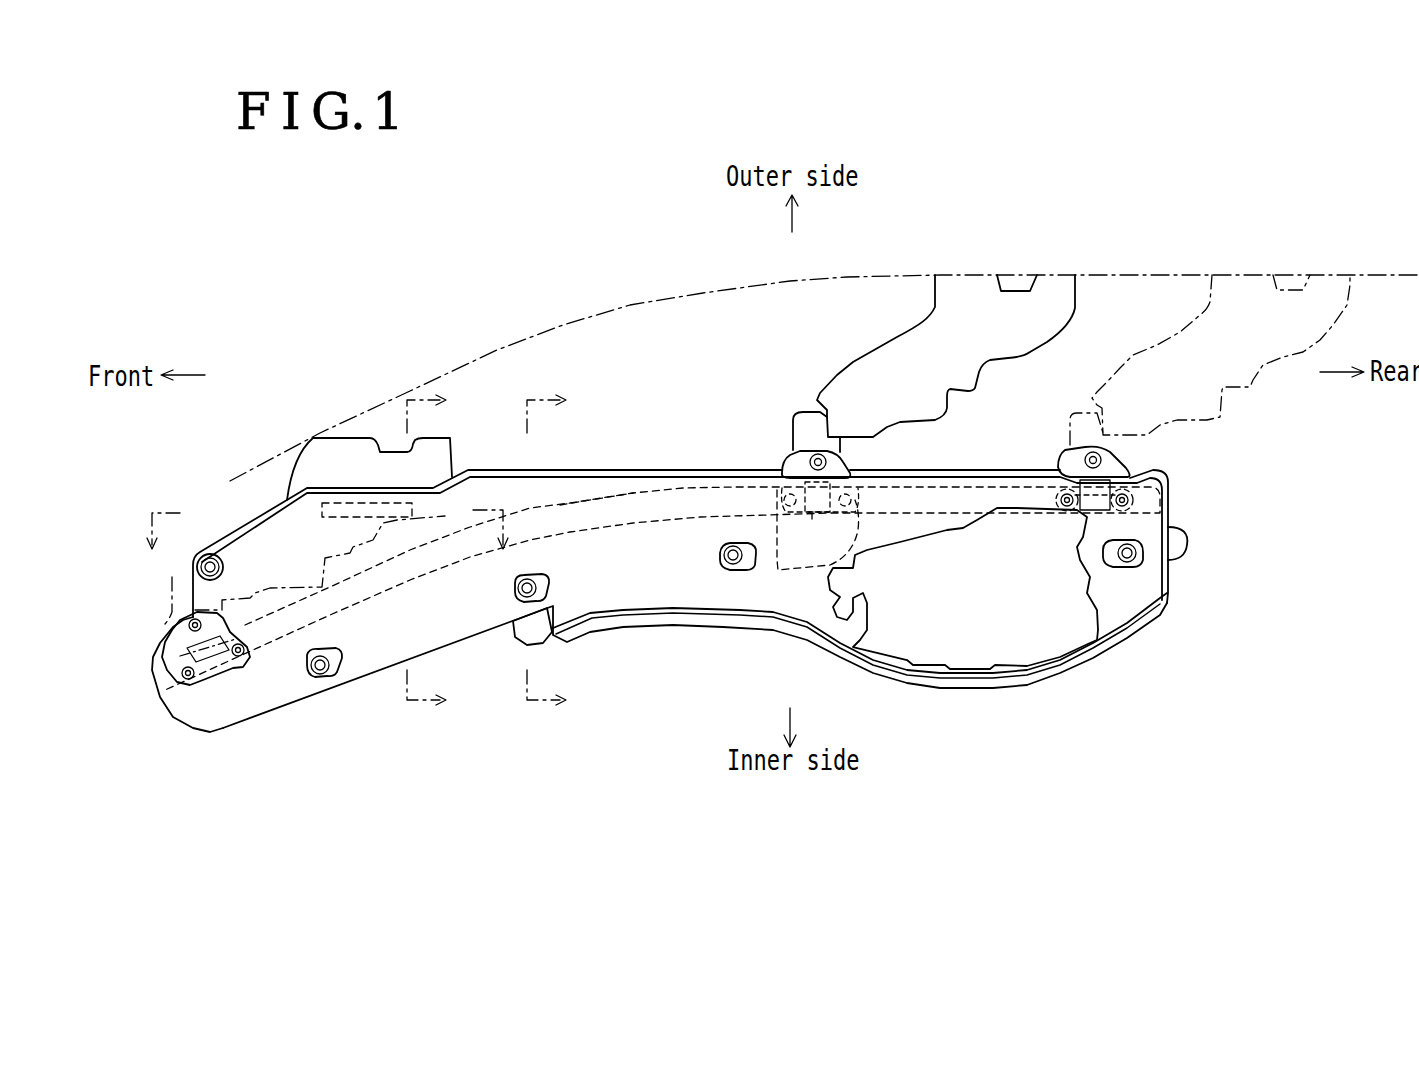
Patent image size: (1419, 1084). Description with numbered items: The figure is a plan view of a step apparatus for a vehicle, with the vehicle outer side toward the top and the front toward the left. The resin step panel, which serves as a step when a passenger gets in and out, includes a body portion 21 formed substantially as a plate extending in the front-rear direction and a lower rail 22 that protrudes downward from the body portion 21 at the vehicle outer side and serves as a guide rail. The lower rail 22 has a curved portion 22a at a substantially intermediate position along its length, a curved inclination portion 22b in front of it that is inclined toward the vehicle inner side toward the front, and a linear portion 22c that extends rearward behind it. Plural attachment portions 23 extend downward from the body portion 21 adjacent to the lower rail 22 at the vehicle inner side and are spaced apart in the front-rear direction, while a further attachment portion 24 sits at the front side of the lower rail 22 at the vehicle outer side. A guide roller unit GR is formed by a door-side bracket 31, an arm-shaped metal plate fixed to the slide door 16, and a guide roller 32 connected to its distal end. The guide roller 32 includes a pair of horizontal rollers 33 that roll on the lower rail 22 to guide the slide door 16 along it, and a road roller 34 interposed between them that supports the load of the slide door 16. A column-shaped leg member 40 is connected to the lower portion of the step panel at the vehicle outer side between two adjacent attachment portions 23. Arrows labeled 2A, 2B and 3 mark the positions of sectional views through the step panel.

The slide door 16 is at (1090, 276).
The body portion 21 is at (1125, 605).
The lower rail 22 is at (988, 490).
The curved portion 22a is at (607, 497).
The curved inclination portion 22b is at (283, 640).
The linear portion 22c is at (767, 490).
The attachment portions 23 is at (322, 676).
The attachment portion 24 is at (223, 566).
The door-side bracket 31 is at (853, 362).
The guide roller 32 is at (790, 460).
The horizontal rollers 33 is at (777, 571).
The road roller 34 is at (811, 523).
The leg member 40 is at (344, 500).
The guide roller unit GR is at (750, 333).
The section line 3 is at (326, 548).
The section line 2A is at (588, 551).
The section line 2B is at (468, 552).